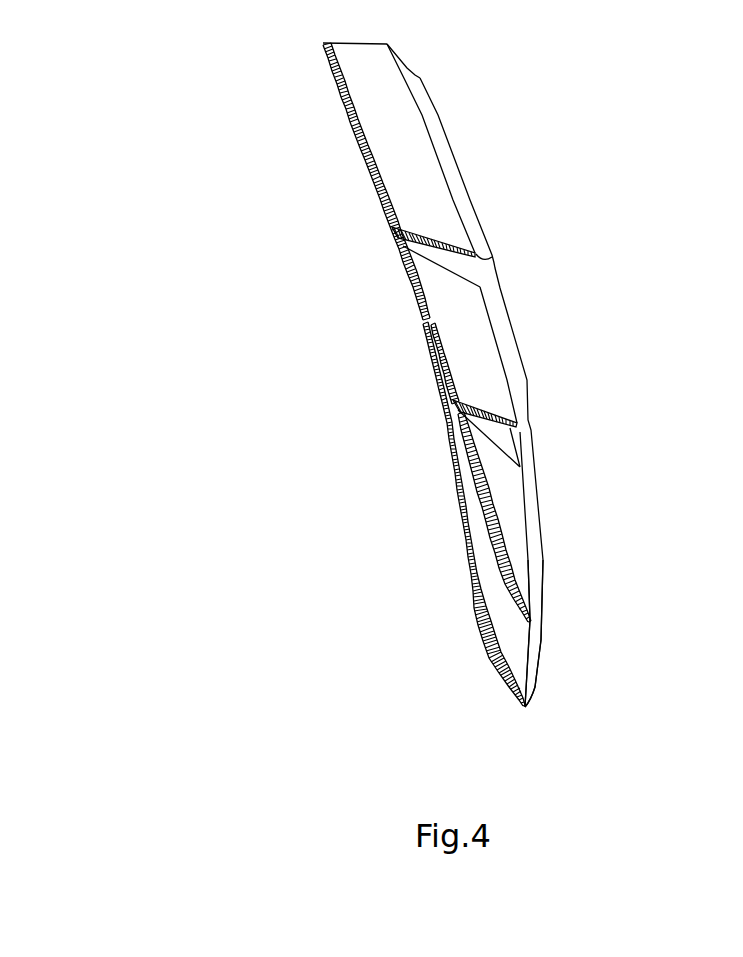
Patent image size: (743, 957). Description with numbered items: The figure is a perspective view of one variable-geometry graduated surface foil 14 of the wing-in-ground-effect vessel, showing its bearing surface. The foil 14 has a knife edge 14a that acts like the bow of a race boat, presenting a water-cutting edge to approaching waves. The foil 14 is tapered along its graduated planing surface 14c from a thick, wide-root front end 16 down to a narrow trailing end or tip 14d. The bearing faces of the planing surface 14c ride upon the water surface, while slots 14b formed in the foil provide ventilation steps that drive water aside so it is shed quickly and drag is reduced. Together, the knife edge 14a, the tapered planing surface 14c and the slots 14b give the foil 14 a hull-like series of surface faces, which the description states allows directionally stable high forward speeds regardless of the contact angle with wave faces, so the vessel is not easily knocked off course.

The variable-geometry graduated surface foil 14 is at (248, 333).
The knife edge 14a is at (527, 682).
The slots 14b is at (490, 266).
The graduated planing surface 14c is at (517, 535).
The trailing end 14d is at (507, 690).
The front end 16 is at (405, 68).